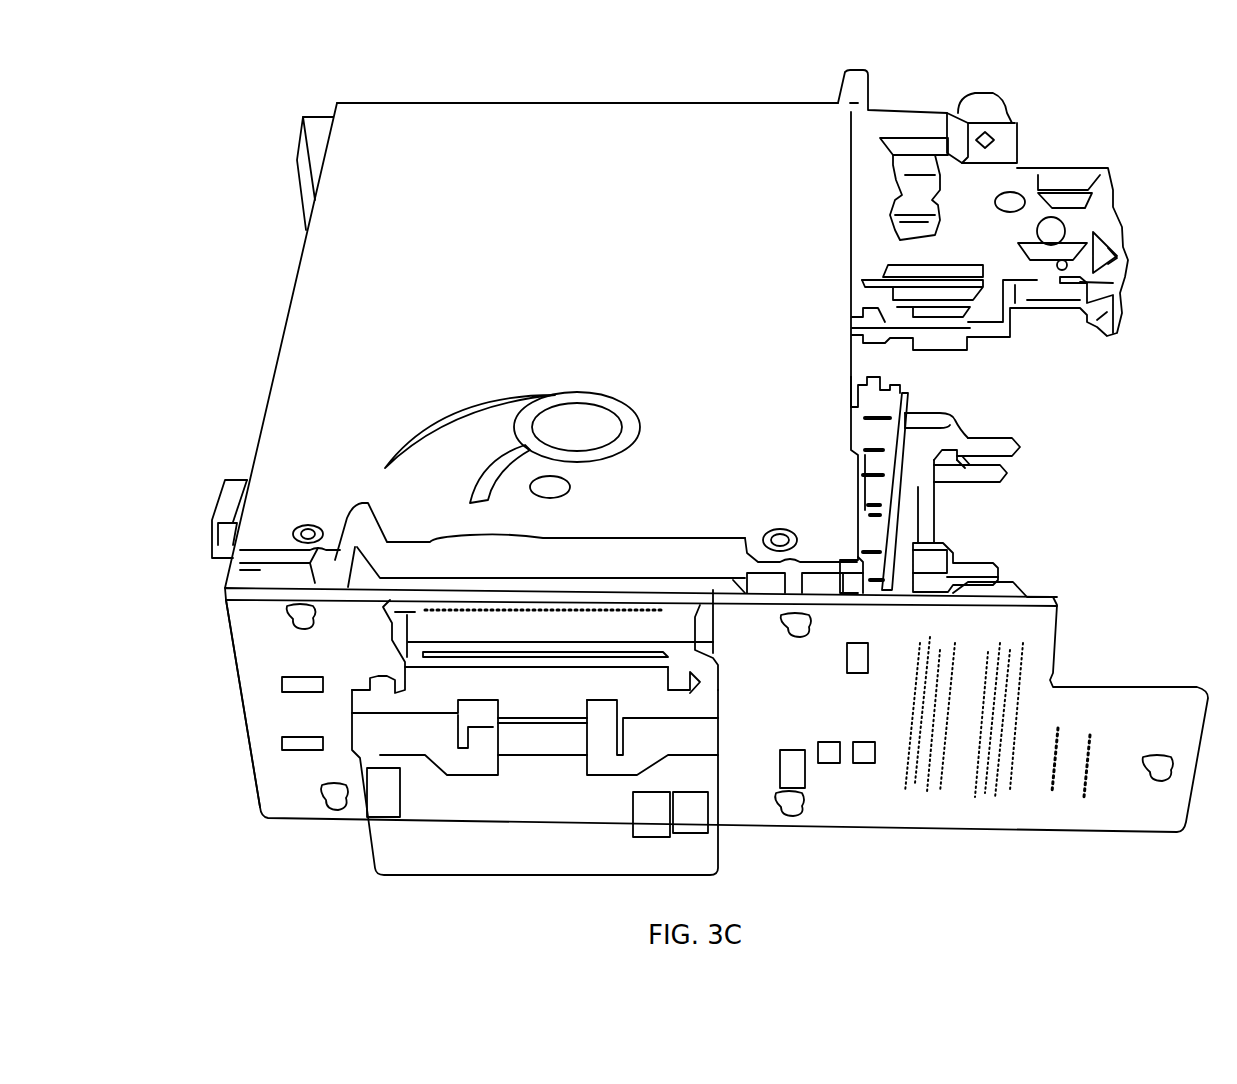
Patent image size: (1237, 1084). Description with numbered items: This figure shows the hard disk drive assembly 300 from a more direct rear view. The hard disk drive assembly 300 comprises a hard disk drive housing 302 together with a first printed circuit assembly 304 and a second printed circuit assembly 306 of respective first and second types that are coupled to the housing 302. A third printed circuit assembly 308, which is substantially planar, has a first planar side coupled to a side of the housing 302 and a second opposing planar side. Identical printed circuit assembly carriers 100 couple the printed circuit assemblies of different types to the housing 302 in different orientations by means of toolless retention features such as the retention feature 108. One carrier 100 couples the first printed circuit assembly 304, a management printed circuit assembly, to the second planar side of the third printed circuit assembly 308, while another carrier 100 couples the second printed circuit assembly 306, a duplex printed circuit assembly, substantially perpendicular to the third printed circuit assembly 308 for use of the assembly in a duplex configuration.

The hard disk drive assembly 300 is at (1157, 138).
The hard disk drive housing 302 is at (315, 287).
The first printed circuit assembly 304 is at (440, 863).
The second printed circuit assembly 306 is at (905, 512).
The third printed circuit assembly 308 is at (258, 733).
The printed circuit assembly carrier 100 is at (955, 432).
The toolless retention feature 108 is at (1012, 436).